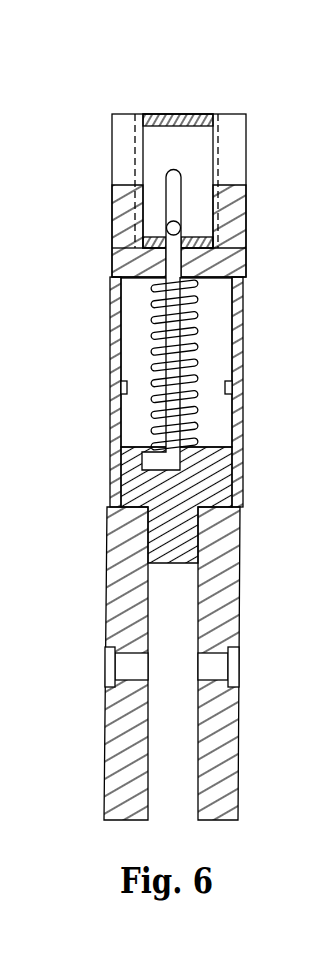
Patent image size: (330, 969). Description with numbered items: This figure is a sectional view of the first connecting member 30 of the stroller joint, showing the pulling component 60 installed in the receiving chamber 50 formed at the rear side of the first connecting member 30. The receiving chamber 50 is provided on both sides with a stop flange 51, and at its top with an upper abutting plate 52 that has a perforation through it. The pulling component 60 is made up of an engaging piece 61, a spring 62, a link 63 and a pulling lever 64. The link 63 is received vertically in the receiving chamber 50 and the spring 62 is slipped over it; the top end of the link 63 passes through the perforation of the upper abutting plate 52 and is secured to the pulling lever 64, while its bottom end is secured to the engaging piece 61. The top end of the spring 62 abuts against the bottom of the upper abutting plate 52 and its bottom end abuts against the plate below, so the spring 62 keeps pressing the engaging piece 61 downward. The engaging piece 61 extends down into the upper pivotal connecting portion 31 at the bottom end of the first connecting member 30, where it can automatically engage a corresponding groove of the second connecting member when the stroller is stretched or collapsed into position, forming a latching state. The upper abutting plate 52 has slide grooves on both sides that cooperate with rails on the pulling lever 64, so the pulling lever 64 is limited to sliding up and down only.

The first connecting member 30 is at (170, 641).
The upper pivotal connecting portion 31 is at (227, 729).
The receiving chamber 50 is at (220, 338).
The stop flange 51 is at (122, 391).
The upper abutting plate 52 is at (133, 268).
The pulling component 60 is at (161, 110).
The engaging piece 61 is at (188, 527).
The spring 62 is at (153, 338).
The link 63 is at (214, 279).
The pulling lever 64 is at (195, 150).